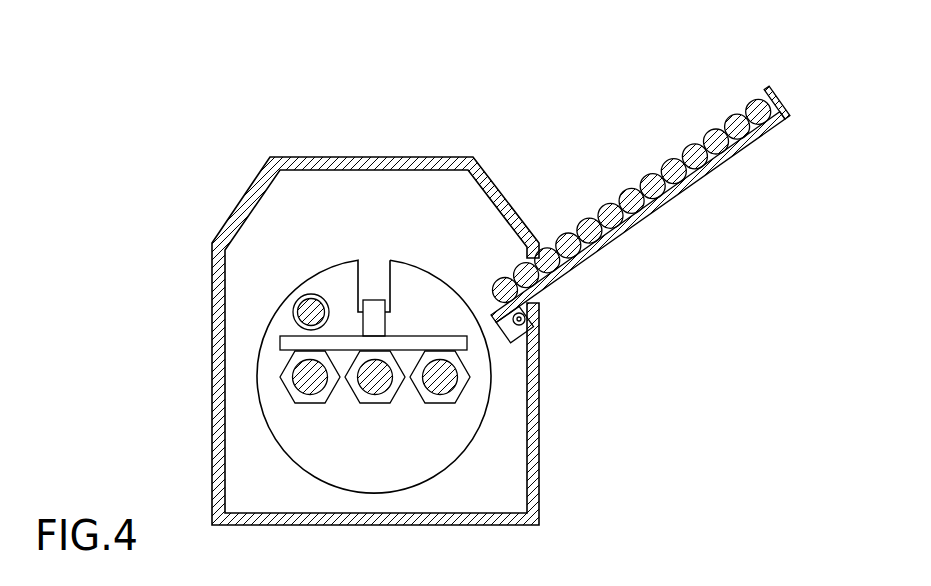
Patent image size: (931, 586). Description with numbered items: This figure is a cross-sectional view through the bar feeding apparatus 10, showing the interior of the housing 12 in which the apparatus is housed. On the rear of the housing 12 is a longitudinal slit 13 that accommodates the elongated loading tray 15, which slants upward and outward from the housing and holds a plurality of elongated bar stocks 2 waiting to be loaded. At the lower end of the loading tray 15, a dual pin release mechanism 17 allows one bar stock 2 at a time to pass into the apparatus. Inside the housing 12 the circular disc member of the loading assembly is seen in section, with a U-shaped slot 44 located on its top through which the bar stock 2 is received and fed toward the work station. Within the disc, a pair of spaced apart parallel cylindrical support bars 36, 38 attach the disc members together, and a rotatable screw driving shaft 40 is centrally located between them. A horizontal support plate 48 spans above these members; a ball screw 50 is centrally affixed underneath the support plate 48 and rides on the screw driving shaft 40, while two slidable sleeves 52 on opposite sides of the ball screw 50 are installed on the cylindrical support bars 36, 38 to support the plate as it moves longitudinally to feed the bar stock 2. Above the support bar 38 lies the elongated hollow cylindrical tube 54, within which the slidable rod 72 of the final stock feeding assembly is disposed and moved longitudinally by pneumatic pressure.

The bar feeding apparatus 10 is at (527, 75).
The housing 12 is at (212, 457).
The longitudinal slit 13 is at (541, 318).
The loading tray 15 is at (797, 124).
The dual pin release mechanism 17 is at (539, 307).
The bar stock 2 is at (650, 174).
The U-shaped slot 44 is at (390, 277).
The horizontal support plate 48 is at (282, 340).
The slidable rod 72 is at (315, 293).
The hollow cylindrical tube 54 is at (293, 305).
The cylindrical support bar 38 is at (283, 374).
The slidable sleeve 52 is at (290, 393).
The screw driving shaft 40 is at (390, 405).
The ball screw 50 is at (378, 386).
The cylindrical support bar 36 is at (470, 377).